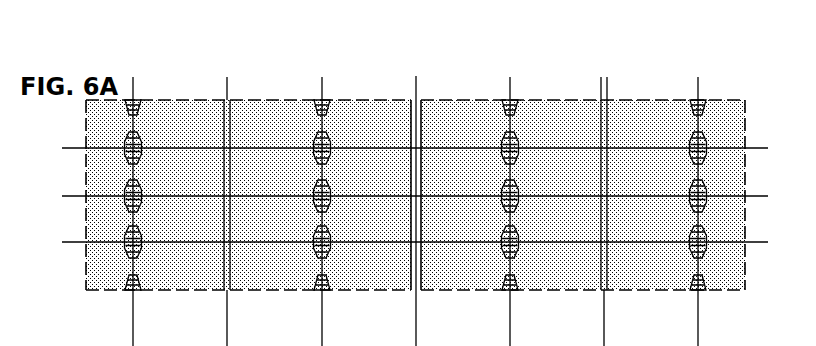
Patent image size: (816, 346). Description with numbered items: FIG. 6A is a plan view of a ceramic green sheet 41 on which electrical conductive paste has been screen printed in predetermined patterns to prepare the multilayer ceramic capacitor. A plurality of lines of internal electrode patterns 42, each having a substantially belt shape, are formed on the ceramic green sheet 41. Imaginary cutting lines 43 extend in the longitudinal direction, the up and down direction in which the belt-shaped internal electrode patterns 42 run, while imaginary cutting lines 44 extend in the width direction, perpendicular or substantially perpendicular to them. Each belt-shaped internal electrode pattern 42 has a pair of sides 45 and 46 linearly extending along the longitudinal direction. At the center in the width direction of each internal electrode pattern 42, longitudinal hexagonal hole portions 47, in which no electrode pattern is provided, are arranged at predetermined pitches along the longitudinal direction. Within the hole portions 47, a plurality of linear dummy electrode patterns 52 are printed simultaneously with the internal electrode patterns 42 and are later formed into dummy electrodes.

The ceramic green sheet 41 is at (607, 97).
The internal electrode pattern 42 is at (366, 97).
The imaginary cutting line in longitudinal direction 43 is at (322, 90).
The imaginary cutting line in width direction 44 is at (768, 148).
The side of internal electrode pattern 45 is at (230, 258).
The side of internal electrode pattern 46 is at (412, 259).
The hexagonal hole portion 47 is at (502, 145).
The linear dummy electrode pattern 52 is at (699, 100).